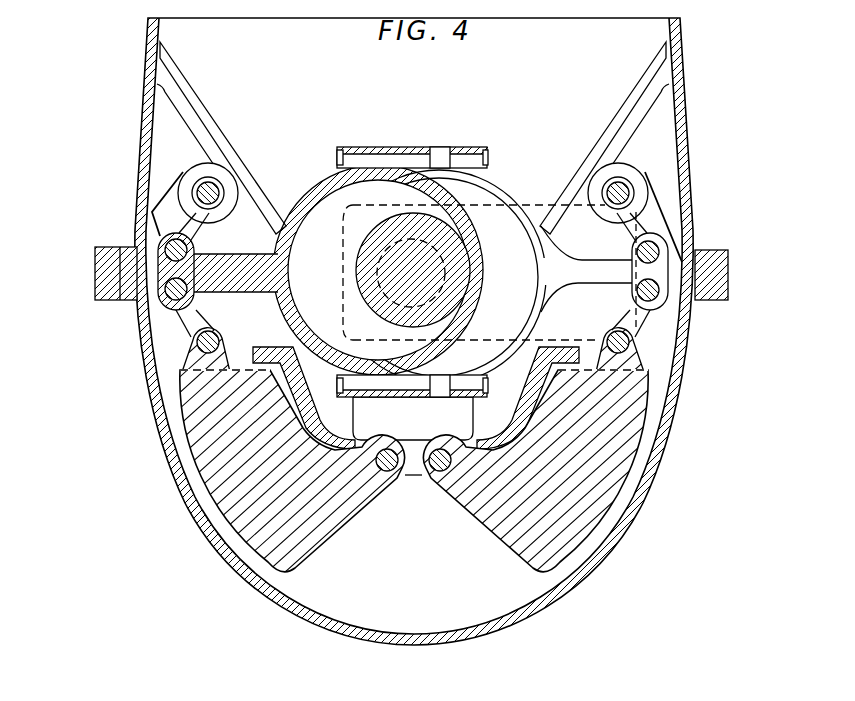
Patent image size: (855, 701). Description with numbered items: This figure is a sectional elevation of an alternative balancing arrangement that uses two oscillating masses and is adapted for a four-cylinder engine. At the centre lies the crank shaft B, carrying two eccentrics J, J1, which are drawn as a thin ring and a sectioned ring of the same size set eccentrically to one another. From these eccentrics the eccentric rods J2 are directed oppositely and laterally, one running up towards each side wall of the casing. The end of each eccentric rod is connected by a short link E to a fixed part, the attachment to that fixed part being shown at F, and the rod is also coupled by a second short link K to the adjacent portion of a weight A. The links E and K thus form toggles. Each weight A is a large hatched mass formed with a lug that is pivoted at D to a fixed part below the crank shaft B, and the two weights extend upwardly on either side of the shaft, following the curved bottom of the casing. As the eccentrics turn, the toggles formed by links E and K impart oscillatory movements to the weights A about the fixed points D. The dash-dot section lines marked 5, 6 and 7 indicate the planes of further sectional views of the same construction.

The section line 5-5 / flange bolts 5 is at (95, 268).
The section line 6- 6 is at (416, 140).
The section line 7- 7 is at (208, 105).
The weight A is at (283, 540).
The crank shaft B is at (423, 253).
The pivot D is at (426, 472).
The short link E is at (633, 220).
The pivot bolt F is at (630, 184).
The eccentric J is at (493, 200).
The eccentric J1 is at (332, 220).
The eccentric rod J2 is at (580, 270).
The second short link K is at (637, 320).